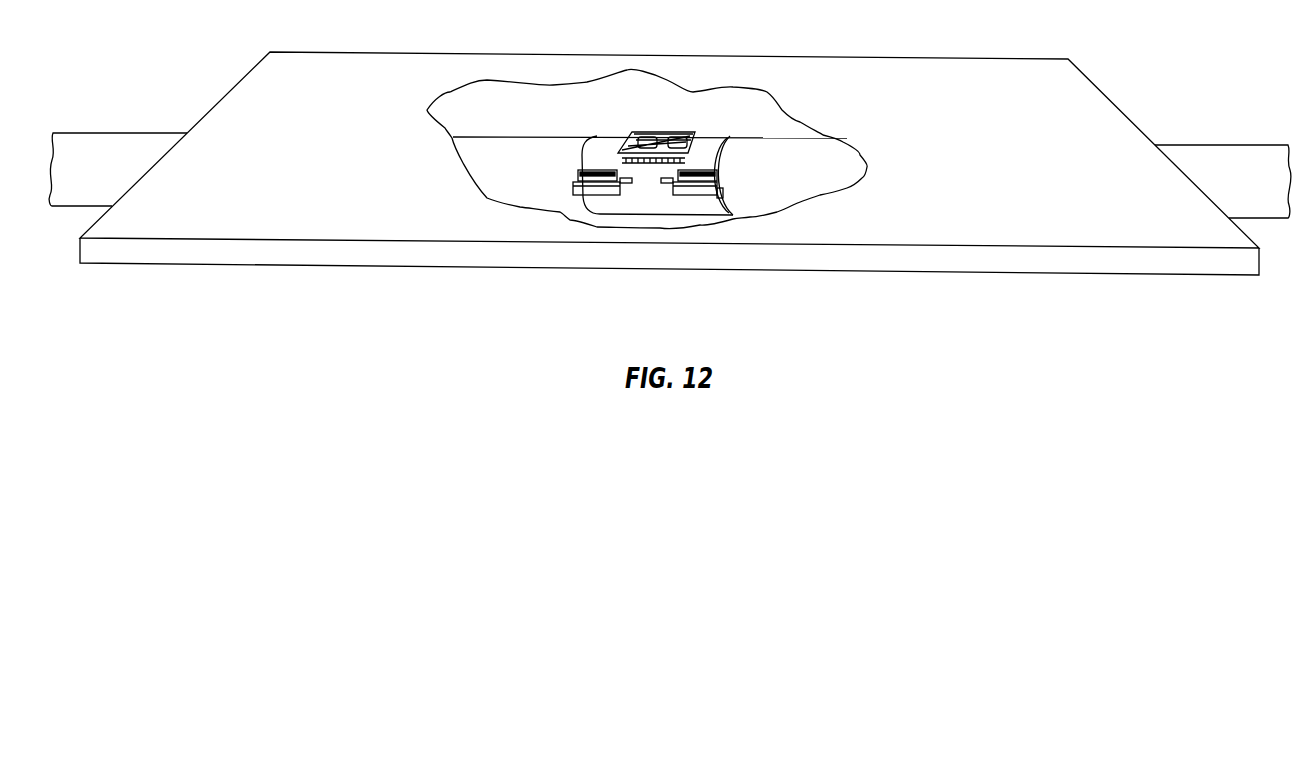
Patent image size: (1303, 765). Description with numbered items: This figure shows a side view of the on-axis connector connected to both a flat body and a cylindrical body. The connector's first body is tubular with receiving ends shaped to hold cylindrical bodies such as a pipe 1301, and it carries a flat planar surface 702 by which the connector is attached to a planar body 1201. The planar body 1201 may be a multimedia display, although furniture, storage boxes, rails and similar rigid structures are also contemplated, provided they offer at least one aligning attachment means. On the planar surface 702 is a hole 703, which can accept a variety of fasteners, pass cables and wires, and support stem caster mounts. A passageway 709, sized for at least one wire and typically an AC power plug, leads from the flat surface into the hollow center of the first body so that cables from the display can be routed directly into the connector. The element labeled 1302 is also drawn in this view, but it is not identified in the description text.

The planar body 1201 is at (1078, 240).
The pipe 1301 is at (813, 148).
The base strip 1302 is at (542, 148).
The planar surface 702 is at (683, 132).
The hole 703 is at (665, 130).
The passageway 709 is at (697, 158).